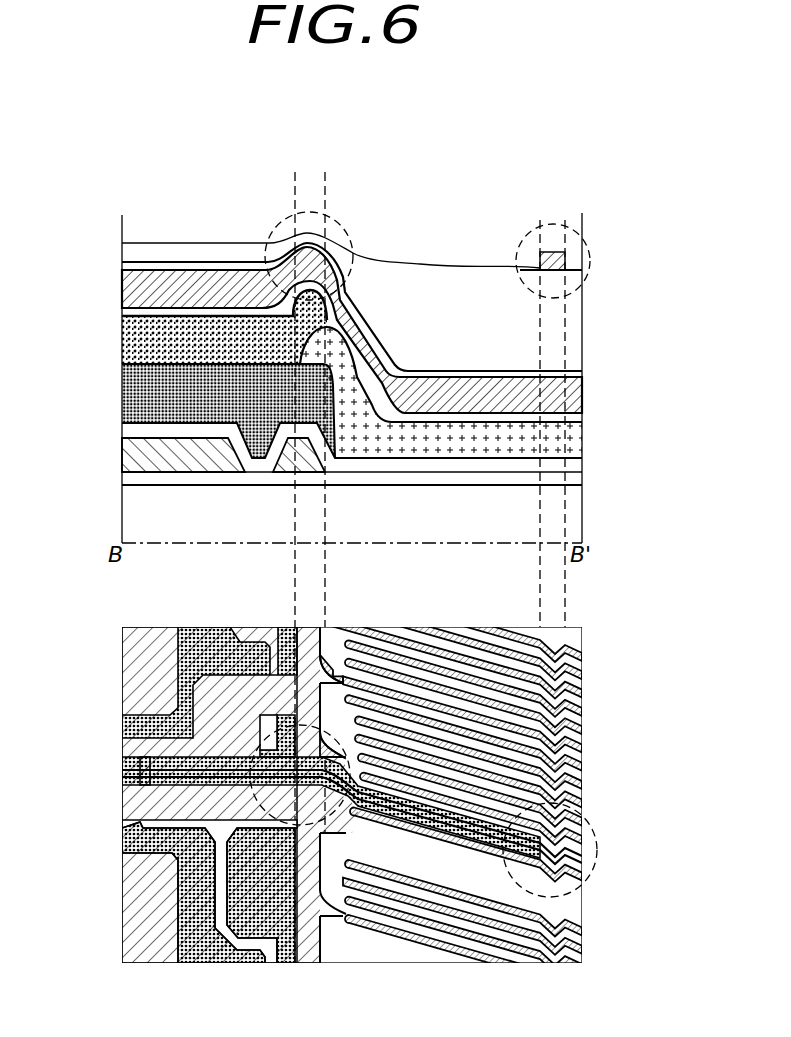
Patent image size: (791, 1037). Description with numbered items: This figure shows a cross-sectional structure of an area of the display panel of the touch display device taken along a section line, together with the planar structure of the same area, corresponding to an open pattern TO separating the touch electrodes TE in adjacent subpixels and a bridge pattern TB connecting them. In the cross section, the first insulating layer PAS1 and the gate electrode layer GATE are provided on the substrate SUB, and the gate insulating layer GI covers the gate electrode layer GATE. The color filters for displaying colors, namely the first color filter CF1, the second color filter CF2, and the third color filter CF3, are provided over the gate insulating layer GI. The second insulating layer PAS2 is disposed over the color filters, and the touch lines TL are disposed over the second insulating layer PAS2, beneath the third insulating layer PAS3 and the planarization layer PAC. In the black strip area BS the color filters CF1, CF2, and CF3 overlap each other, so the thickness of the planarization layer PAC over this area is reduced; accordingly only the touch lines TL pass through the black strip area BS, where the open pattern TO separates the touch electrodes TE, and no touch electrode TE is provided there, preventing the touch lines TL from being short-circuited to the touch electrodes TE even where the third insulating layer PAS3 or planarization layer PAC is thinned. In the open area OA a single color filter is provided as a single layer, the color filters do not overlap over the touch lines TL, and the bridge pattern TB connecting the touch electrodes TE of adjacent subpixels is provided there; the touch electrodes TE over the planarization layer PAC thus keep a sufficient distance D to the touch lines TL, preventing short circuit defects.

The touch line TL is at (122, 285).
The second insulating layer PAS2 is at (122, 312).
The third color filter CF3 is at (122, 340).
The first color filter CF1 is at (122, 395).
The gate insulating layer GI is at (122, 430).
The gate electrode layer GATE is at (122, 455).
The third insulating layer PAS3 is at (572, 372).
The second color filter CF2 is at (572, 437).
The first insulating layer PAS1 is at (572, 478).
The substrate SUB is at (572, 512).
The touch electrode TE is at (550, 250).
The planarization layer PAC is at (572, 328).
The distance D is at (552, 272).
The black strip area BS is at (436, 183).
The open area OA is at (438, 183).
The open pattern TO is at (262, 805).
The bridge pattern TB is at (597, 852).